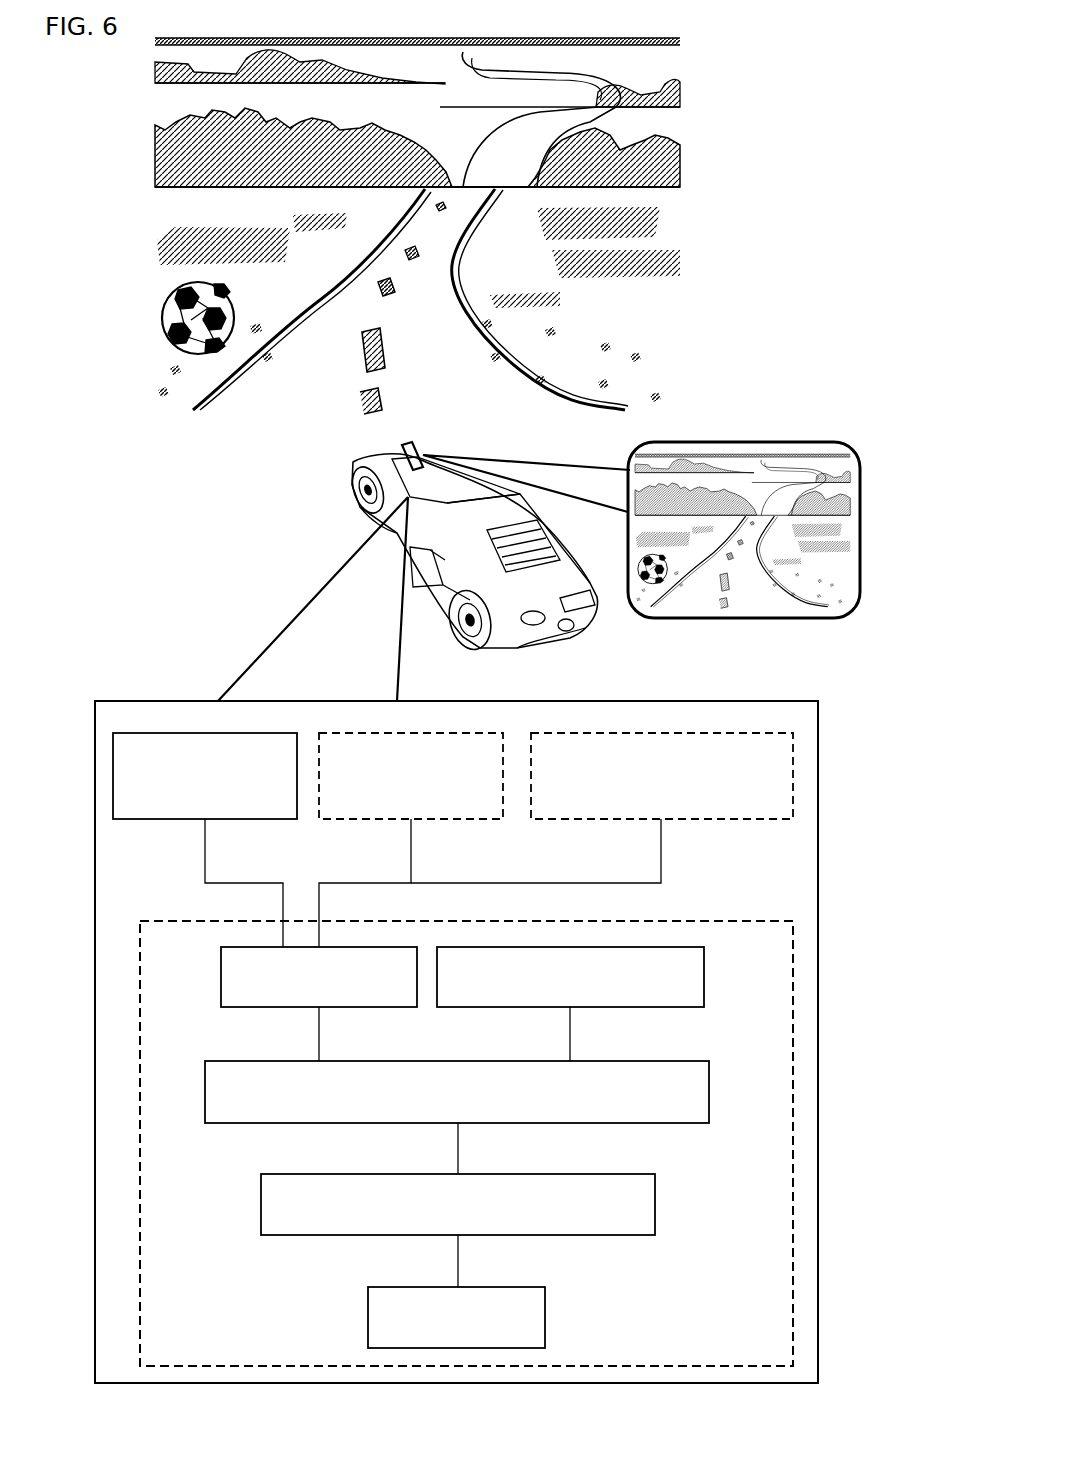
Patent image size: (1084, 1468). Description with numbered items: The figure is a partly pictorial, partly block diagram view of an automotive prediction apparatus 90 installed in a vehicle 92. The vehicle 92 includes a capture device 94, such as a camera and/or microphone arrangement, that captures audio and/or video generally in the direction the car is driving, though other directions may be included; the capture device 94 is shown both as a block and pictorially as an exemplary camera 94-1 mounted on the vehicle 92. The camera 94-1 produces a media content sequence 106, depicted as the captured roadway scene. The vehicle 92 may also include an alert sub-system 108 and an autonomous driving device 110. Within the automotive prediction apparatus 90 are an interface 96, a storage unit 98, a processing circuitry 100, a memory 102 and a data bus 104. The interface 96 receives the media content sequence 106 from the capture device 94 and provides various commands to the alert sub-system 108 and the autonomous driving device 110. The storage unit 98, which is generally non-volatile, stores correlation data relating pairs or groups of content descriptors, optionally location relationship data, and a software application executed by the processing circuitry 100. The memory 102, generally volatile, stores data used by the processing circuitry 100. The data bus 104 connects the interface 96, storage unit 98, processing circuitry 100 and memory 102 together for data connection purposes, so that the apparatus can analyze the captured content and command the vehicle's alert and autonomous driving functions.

The automotive prediction apparatus 90 is at (140, 1145).
The vehicle 92 is at (352, 488).
The capture device 94 is at (205, 733).
The camera 94-1 is at (403, 450).
The interface 96 is at (221, 977).
The storage unit 98 is at (704, 977).
The processing circuitry 100 is at (261, 1205).
The memory 102 is at (368, 1317).
The data bus 104 is at (709, 1093).
The media content sequence 106 is at (745, 442).
The alert sub-system 108 is at (410, 733).
The autonomous driving device 110 is at (661, 733).